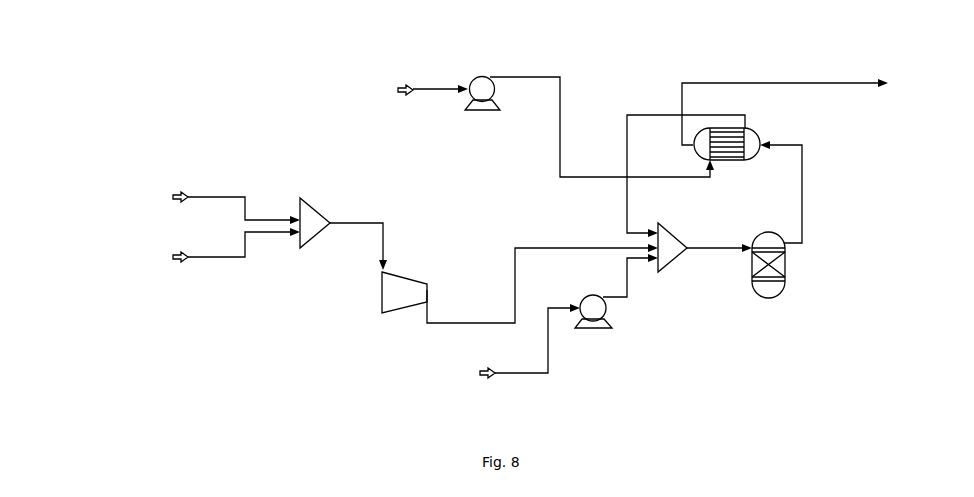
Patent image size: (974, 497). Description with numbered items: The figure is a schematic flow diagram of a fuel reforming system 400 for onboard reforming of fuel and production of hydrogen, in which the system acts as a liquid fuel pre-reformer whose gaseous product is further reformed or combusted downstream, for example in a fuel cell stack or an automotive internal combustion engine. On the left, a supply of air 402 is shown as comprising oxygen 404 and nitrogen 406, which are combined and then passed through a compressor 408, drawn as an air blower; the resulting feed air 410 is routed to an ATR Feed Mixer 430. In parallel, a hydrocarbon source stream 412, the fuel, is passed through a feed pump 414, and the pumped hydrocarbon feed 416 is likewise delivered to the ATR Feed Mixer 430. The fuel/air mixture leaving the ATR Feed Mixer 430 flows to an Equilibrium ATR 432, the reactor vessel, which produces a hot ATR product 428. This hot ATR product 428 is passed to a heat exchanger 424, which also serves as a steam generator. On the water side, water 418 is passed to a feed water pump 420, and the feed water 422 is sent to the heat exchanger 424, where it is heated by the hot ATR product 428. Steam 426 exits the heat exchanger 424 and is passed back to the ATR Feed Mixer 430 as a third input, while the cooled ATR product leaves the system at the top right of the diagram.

The fuel reforming system 400 is at (266, 46).
The supply of air 402 is at (392, 230).
The oxygen 404 is at (206, 196).
The nitrogen 406 is at (206, 254).
The compressor 408 is at (387, 302).
The feed air 410 is at (527, 223).
The hydrocarbon source stream 412 is at (515, 385).
The feed pump 414 is at (640, 358).
The hydrocarbon feed 416 is at (627, 273).
The water 418 is at (367, 83).
The feed water pump 420 is at (465, 95).
The feed water 422 is at (595, 53).
The heat exchanger 424 is at (757, 127).
The steam 426 is at (657, 95).
The hot ATR product 428 is at (875, 180).
The ATR Feed Mixer 430 is at (678, 238).
The Equilibrium ATR 432 is at (793, 268).